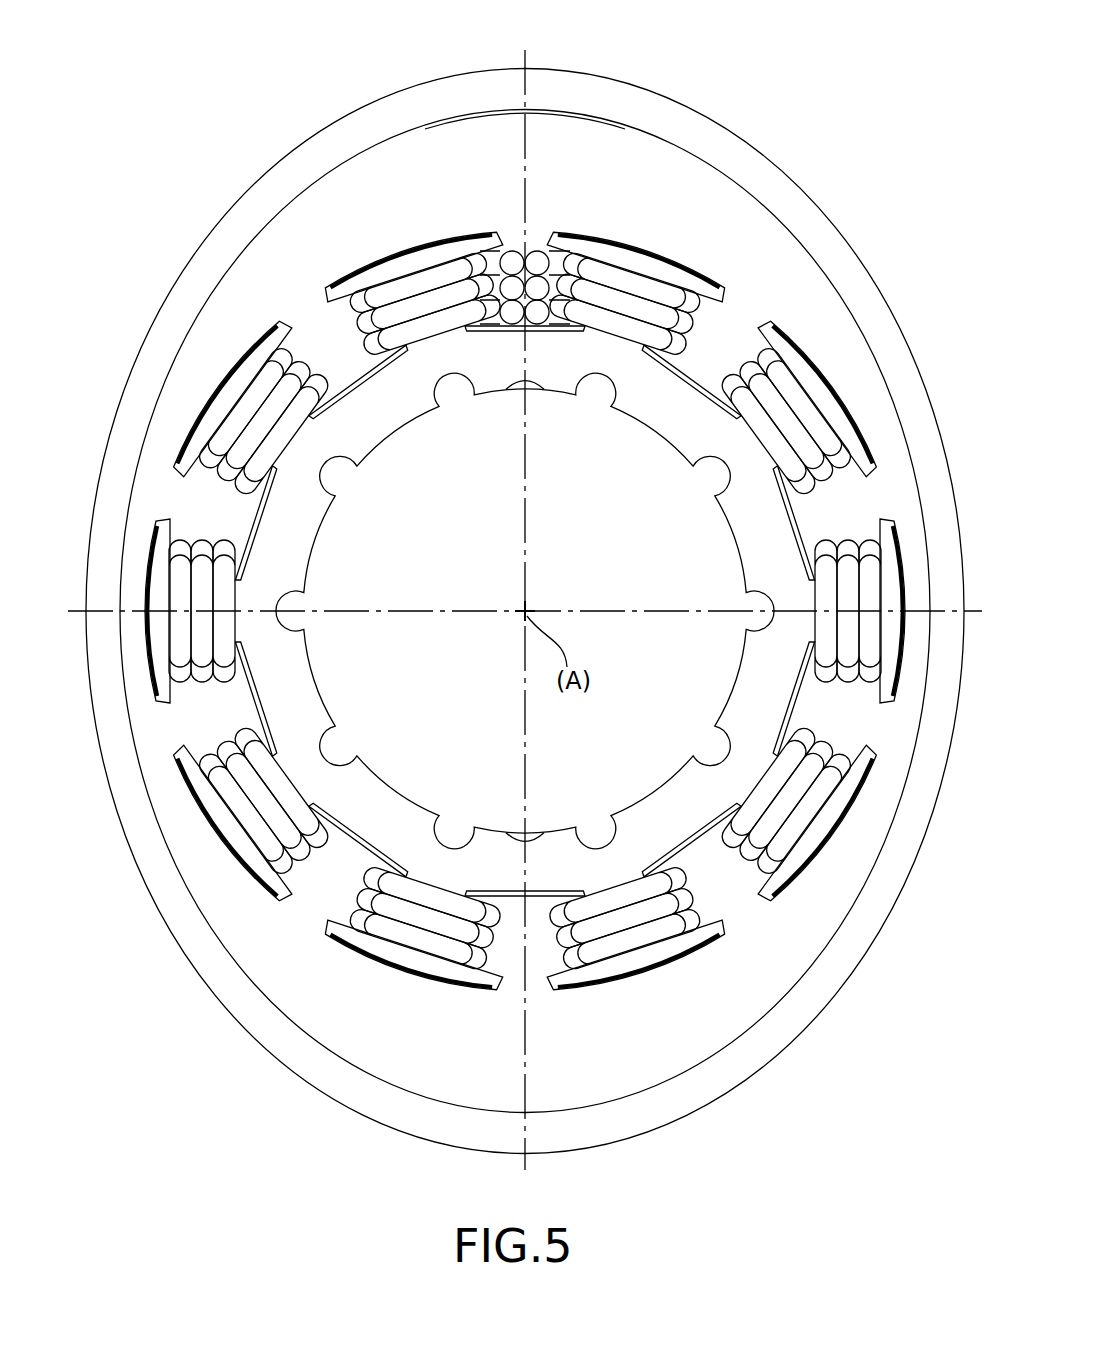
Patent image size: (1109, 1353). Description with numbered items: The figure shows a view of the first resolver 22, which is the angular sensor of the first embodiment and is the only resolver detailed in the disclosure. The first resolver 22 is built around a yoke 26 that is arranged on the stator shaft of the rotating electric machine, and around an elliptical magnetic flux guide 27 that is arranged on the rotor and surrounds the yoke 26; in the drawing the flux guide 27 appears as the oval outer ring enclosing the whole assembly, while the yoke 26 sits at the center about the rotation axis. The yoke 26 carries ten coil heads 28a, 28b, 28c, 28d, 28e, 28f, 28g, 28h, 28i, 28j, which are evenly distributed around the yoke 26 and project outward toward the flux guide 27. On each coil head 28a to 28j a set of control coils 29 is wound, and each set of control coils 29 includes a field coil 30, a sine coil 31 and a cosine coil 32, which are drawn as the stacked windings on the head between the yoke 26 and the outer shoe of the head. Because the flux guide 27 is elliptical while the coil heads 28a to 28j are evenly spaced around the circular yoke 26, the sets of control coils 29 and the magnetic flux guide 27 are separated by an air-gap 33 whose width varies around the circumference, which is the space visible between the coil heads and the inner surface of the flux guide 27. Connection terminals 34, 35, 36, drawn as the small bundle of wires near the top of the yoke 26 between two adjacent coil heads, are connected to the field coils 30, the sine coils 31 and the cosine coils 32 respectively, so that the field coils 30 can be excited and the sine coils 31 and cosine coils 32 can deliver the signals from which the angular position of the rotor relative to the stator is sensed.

The first resolver 22 is at (790, 61).
The yoke 26 is at (768, 533).
The elliptical magnetic flux guide 27 is at (760, 177).
The coil head 28a is at (337, 215).
The coil head 28b is at (649, 234).
The coil head 28c is at (842, 378).
The coil head 28d is at (914, 646).
The coil head 28e is at (842, 846).
The coil head 28f is at (647, 988).
The coil head 28g is at (406, 985).
The coil head 28h is at (206, 848).
The coil head 28i is at (135, 574).
The coil head 28j is at (208, 375).
The set of control coils 29 is at (345, 330).
The field coil 30 is at (415, 280).
The sine coil 31 is at (412, 301).
The cosine coil 32 is at (407, 333).
The air-gap 33 is at (606, 188).
The connection terminal 34 is at (511, 258).
The connection terminal 35 is at (508, 285).
The connection terminal 36 is at (540, 300).